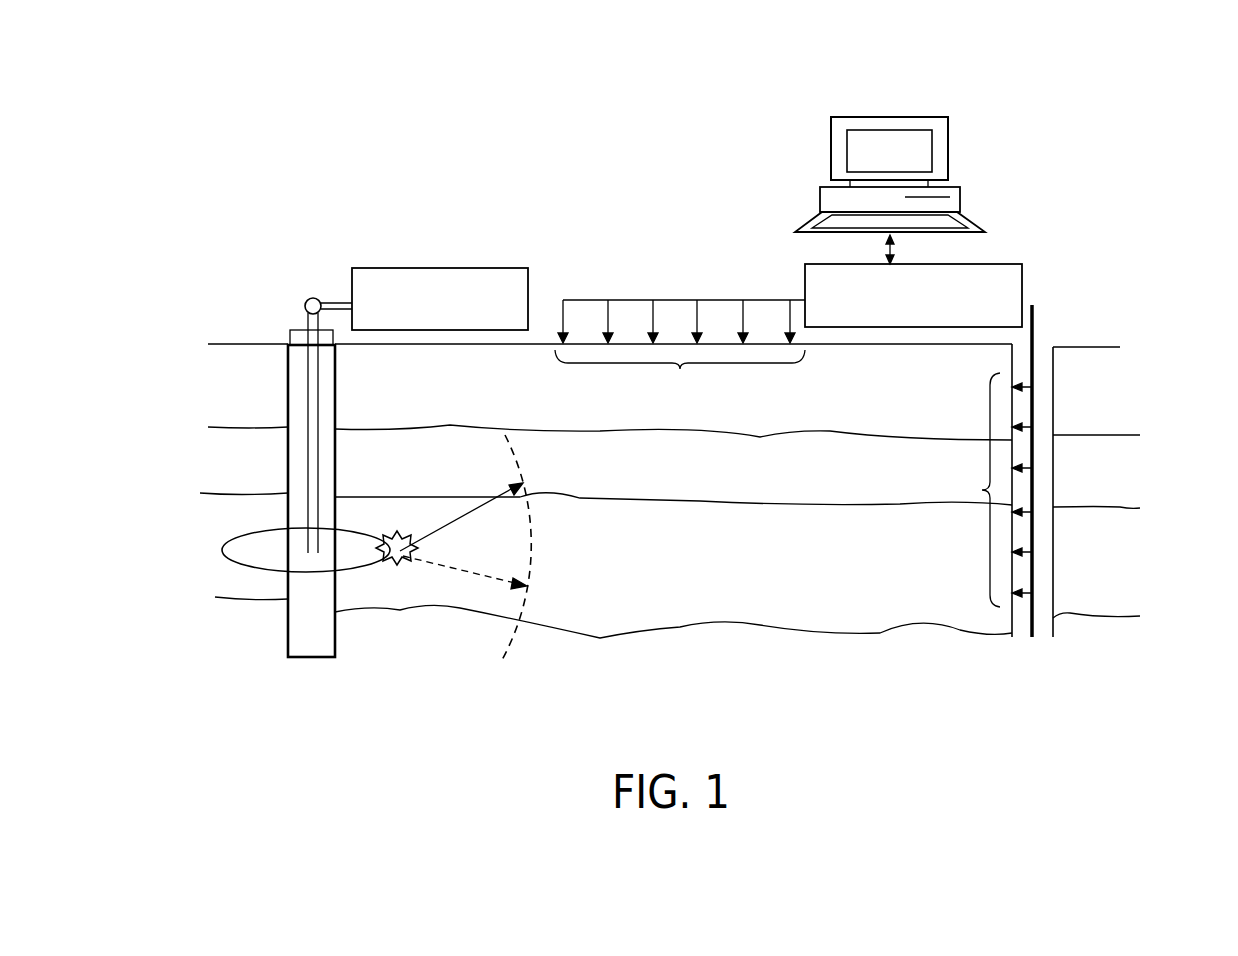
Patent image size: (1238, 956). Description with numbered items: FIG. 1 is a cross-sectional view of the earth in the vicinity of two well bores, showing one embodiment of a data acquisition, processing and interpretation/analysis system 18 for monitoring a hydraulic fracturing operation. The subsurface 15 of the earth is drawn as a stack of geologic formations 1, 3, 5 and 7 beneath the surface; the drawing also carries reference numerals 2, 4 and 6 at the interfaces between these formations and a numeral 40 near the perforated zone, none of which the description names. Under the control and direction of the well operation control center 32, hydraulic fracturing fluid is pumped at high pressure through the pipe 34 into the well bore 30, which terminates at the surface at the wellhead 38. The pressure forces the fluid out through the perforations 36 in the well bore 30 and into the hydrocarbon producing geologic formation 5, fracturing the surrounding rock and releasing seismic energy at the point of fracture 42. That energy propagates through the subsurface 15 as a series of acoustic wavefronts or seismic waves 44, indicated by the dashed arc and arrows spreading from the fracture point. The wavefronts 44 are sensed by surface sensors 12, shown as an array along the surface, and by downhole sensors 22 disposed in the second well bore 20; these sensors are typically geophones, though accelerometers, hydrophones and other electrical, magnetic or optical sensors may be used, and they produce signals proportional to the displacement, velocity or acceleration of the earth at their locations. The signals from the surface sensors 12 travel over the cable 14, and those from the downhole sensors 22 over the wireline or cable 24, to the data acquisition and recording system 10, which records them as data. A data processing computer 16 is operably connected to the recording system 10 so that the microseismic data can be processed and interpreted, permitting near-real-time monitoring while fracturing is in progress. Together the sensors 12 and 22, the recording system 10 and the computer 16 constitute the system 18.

The geologic formation 1 is at (759, 397).
The first layer boundary 2 is at (862, 433).
The geologic formation 3 is at (719, 474).
The second layer boundary 4 is at (866, 505).
The hydrocarbon producing geologic formation 5 is at (707, 567).
The third layer boundary 6 is at (860, 635).
The geologic formation 7 is at (692, 676).
The data acquisition and recording system 10 is at (1022, 282).
The surface sensors 12 is at (680, 374).
The cable 14 is at (676, 300).
The subsurface of the earth 15 is at (1110, 391).
The data processing computer 16 is at (948, 137).
The data acquisition, processing and interpretation/analysis system 18 is at (1040, 179).
The well bore 20 is at (1043, 476).
The downhole sensors 22 is at (992, 490).
The wireline or cable 24 is at (1034, 336).
The well bore 30 is at (300, 386).
The well operation control center 32 is at (440, 268).
The pipe 34 is at (318, 377).
The perforations 36 is at (248, 537).
The wellhead 38 is at (288, 338).
The perforations 40 is at (232, 569).
The point of fracture 42 is at (392, 575).
The seismic wavefronts and energy 44 is at (533, 540).